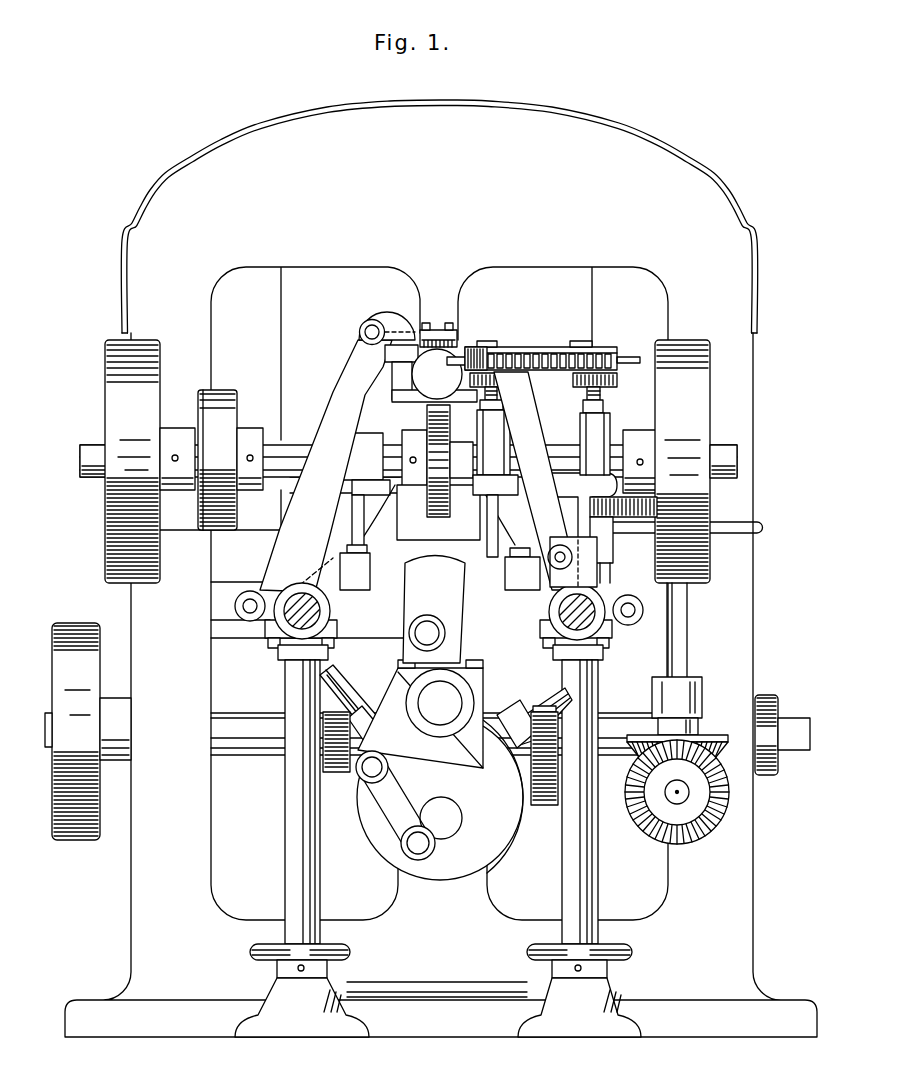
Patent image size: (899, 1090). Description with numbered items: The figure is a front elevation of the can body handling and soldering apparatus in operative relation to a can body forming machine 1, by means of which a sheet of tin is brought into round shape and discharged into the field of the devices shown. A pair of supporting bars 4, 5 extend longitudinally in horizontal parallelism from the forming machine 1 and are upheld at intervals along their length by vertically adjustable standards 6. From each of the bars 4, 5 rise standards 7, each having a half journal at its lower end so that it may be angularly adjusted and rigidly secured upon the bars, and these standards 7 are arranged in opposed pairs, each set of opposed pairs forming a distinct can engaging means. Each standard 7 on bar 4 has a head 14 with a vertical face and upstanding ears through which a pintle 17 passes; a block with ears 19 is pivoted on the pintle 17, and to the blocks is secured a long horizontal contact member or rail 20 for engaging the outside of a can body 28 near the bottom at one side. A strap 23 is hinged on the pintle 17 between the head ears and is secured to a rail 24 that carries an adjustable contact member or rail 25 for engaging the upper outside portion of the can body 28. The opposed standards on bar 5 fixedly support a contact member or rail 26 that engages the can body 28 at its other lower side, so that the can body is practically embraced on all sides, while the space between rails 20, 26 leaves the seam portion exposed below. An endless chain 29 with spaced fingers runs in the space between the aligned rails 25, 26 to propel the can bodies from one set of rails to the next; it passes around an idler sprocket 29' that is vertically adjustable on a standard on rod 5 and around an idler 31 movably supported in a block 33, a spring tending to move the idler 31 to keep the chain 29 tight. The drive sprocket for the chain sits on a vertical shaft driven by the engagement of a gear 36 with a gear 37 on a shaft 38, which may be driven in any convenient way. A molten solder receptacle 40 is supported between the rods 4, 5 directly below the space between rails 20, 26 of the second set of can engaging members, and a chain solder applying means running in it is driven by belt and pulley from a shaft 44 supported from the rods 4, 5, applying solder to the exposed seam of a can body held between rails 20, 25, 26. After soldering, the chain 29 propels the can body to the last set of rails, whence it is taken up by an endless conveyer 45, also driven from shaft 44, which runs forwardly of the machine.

The can body forming machine 1 is at (639, 170).
The supporting bar 4 is at (297, 628).
The supporting bar 5 is at (598, 653).
The vertically adjustable standards 6 is at (285, 832).
The standards 7 is at (345, 410).
The head 14 is at (370, 352).
The pintle 17 is at (365, 327).
The ears 19 is at (392, 313).
The contact member or rail 20 is at (400, 387).
The strap 23 is at (388, 328).
The rail 24 is at (438, 330).
The adjustable contact member or rail 25 is at (458, 348).
The contact member or rail 26 is at (473, 390).
The can body 28 is at (427, 400).
The endless chain 29 is at (552, 332).
The idler sprocket 29' is at (492, 327).
The idler 31 is at (600, 347).
The block 33 is at (557, 612).
The gear 36 is at (620, 517).
The gear 37 is at (657, 510).
The shaft 38 is at (647, 630).
The molten solder receptacle 40 is at (458, 520).
The shaft 44 is at (97, 465).
The endless conveyer 45 is at (437, 495).